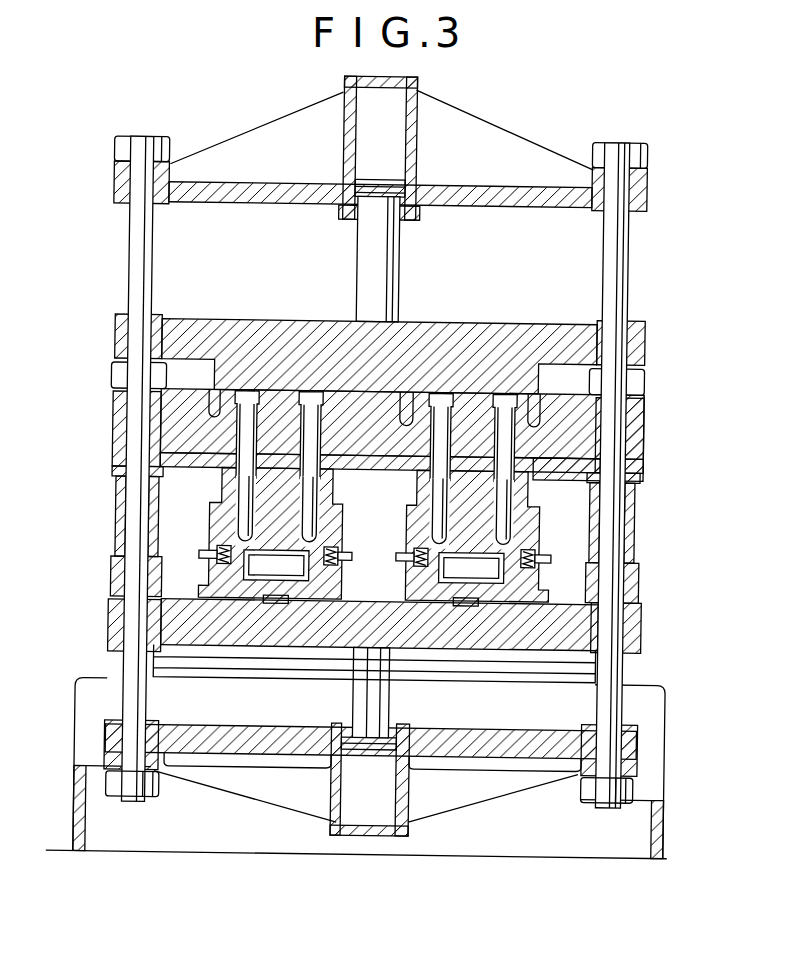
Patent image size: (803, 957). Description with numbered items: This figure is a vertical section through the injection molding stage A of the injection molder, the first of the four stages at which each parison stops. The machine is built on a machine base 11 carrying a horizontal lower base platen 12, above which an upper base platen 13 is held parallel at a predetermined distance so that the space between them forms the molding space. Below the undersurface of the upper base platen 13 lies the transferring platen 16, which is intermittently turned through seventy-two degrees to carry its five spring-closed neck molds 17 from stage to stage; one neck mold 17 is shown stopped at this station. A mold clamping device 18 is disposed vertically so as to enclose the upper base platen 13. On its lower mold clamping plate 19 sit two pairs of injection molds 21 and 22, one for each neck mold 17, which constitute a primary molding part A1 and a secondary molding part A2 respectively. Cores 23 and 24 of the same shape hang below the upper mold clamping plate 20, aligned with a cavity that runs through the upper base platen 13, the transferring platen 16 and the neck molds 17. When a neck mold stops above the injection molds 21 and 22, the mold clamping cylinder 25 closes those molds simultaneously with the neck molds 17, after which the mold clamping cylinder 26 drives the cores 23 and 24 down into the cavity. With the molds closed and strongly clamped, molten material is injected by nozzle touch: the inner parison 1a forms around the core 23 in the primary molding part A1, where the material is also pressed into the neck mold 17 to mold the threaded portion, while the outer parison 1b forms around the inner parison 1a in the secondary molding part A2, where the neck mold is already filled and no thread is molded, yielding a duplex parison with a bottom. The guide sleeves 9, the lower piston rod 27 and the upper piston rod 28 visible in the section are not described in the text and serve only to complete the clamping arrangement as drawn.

The injection molding stage A is at (214, 124).
The primary molding part A1 is at (221, 534).
The secondary molding part A2 is at (537, 539).
The inner parison 1a is at (312, 535).
The outer parison 1b is at (520, 548).
The guide sleeve 9 is at (126, 548).
The machine base 11 is at (95, 705).
The lower base platen 12 is at (165, 668).
The upper base platen 13 is at (174, 429).
The transferring platen 16 is at (569, 462).
The neck mold 17 is at (160, 498).
The mold clamping device 18 is at (371, 355).
The lower mold clamping plate 19 is at (150, 615).
The upper mold clamping plate 20 is at (247, 348).
The injection mold 21 is at (235, 550).
The injection mold 22 is at (428, 512).
The core 23 is at (245, 513).
The core 24 is at (505, 525).
The mold clamping cylinder 25 is at (405, 795).
The mold clamping cylinder 26 is at (405, 154).
The lower piston rod 27 is at (375, 702).
The upper piston rod 28 is at (368, 256).